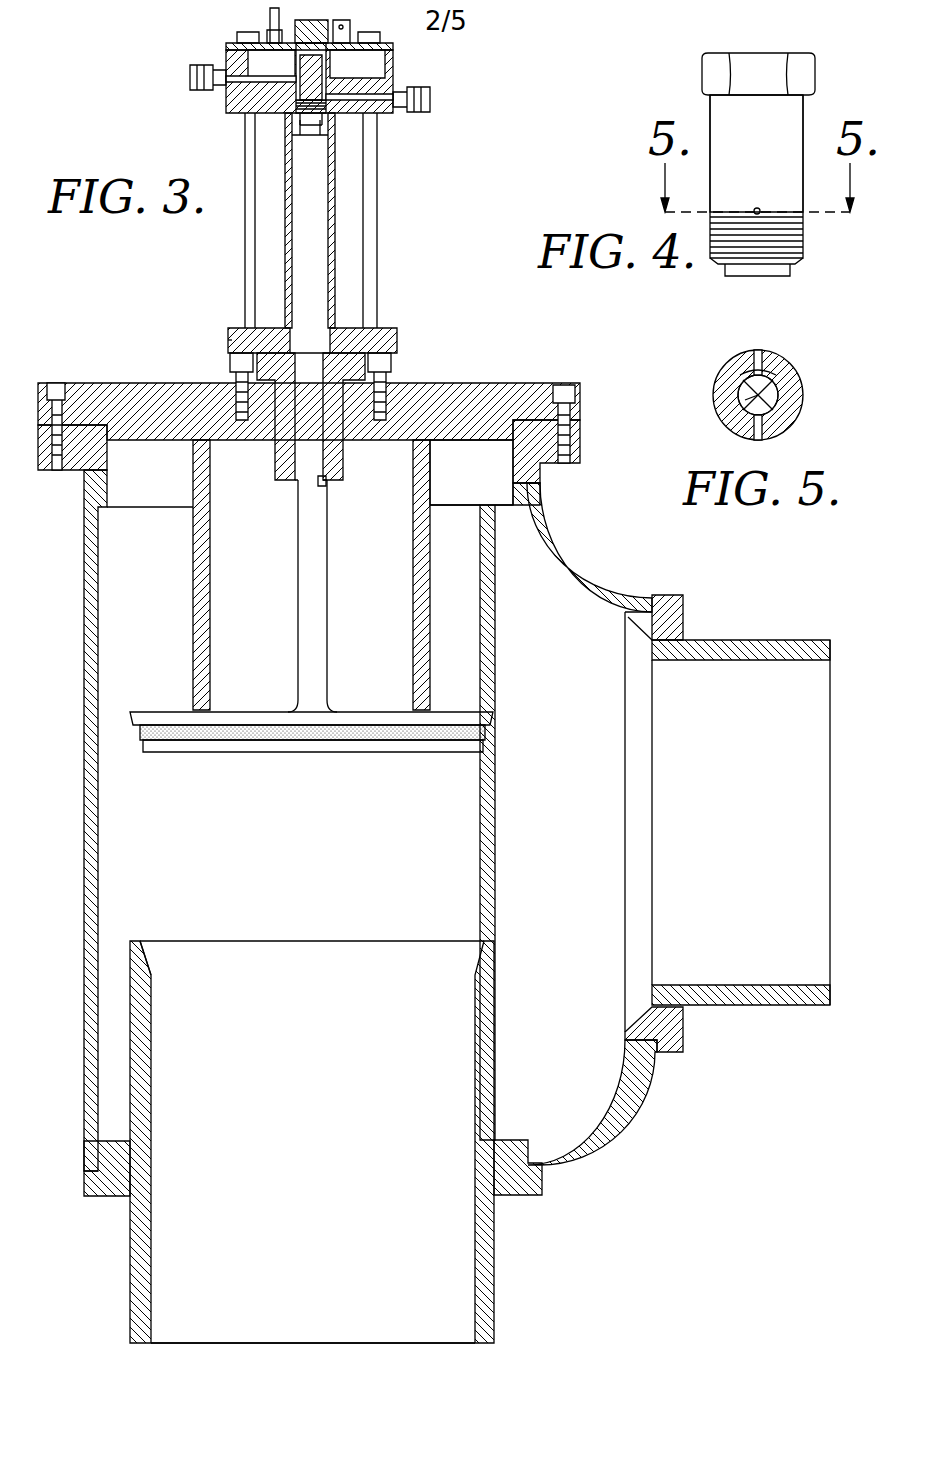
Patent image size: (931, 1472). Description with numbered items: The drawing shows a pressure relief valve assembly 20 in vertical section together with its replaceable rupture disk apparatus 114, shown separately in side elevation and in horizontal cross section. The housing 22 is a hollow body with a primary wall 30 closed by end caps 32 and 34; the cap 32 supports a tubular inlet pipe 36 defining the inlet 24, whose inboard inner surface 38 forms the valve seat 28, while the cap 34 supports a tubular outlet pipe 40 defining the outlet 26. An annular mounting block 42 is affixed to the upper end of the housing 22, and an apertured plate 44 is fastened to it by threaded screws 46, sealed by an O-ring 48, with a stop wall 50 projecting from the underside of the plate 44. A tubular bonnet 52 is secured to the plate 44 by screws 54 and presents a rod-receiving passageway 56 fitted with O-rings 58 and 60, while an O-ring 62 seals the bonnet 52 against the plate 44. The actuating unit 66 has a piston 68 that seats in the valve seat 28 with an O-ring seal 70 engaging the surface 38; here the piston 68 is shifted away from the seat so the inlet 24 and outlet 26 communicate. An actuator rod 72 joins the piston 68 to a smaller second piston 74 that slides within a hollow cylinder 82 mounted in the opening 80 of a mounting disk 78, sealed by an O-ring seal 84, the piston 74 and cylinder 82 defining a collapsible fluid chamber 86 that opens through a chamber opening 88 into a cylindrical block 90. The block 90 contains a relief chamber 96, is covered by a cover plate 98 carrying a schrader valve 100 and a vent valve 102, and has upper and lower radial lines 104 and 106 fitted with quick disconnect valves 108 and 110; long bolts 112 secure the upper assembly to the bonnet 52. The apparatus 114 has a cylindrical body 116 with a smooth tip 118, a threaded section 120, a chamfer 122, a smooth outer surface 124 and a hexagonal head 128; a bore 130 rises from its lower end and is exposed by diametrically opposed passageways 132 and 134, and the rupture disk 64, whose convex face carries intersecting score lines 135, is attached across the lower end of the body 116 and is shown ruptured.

In FIG. 3, the valve assembly 20 is at (600, 575).
In FIG. 3, the housing 22 is at (580, 1092).
In FIG. 3, the inlet 24 is at (500, 1320).
In FIG. 3, the outlet 26 is at (815, 1012).
In FIG. 3, the valve seat 28 is at (500, 945).
In FIG. 3, the primary wall 30 is at (86, 850).
In FIG. 3, the end cap 32 is at (105, 1172).
In FIG. 3, the end cap 34 is at (680, 1032).
In FIG. 3, the inlet pipe 36 is at (490, 1240).
In FIG. 3, the inner surface 38 is at (142, 975).
In FIG. 3, the outlet pipe 40 is at (762, 655).
In FIG. 3, the mounting block 42 is at (582, 452).
In FIG. 3, the apertured plate 44 is at (518, 395).
In FIG. 3, the threaded screws 46 is at (57, 392).
In FIG. 3, the O-ring 48 is at (522, 430).
In FIG. 3, the stop wall 50 is at (420, 616).
In FIG. 3, the bonnet 52 is at (338, 452).
In FIG. 3, the screws 54 is at (240, 362).
In FIG. 3, the rod-receiving passageway 56 is at (300, 490).
In FIG. 3, the O-ring 58 is at (398, 334).
In FIG. 3, the O-ring 60 is at (328, 482).
In FIG. 3, the O-ring 62 is at (267, 390).
In FIG. 5, the rupture disk 64 is at (778, 398).
In FIG. 3, the pressure responsive actuating unit 66 is at (500, 712).
In FIG. 3, the piston 68 is at (400, 746).
In FIG. 3, the O-ring seal 70 is at (220, 735).
In FIG. 3, the actuator rod 72 is at (306, 628).
In FIG. 3, the second piston 74 is at (297, 112).
In FIG. 3, the mounting disk 78 is at (230, 340).
In FIG. 3, the rod-receiving opening 80 is at (270, 353).
In FIG. 3, the cylinder 82 is at (337, 218).
In FIG. 3, the O-ring seal 84 is at (340, 328).
In FIG. 3, the fluid chamber 86 is at (300, 212).
In FIG. 3, the chamber opening 88 is at (322, 104).
In FIG. 3, the block 90 is at (395, 72).
In FIG. 3, the relief chamber 96 is at (355, 65).
In FIG. 3, the cover plate 98 is at (257, 45).
In FIG. 3, the schrader valve 100 is at (272, 25).
In FIG. 3, the vent valve 102 is at (348, 24).
In FIG. 3, the upper radial fluid line 104 is at (257, 82).
In FIG. 3, the lower radial fluid line 106 is at (362, 100).
In FIG. 3, the quick disconnect valve 108 is at (195, 78).
In FIG. 3, the quick disconnect valve 110 is at (432, 100).
In FIG. 3, the long bolts 112 is at (378, 190).
In FIG. 3, the rupture disk apparatus 114 is at (302, 28).
In FIG. 4, the rupture disk apparatus 114 is at (748, 158).
In FIG. 4, the body 116 is at (808, 120).
In FIG. 5, the body 116 is at (720, 383).
In FIG. 4, the tip 118 is at (775, 272).
In FIG. 4, the threaded section 120 is at (805, 237).
In FIG. 4, the chamfer 122 is at (722, 264).
In FIG. 4, the outer surface 124 is at (720, 125).
In FIG. 4, the hexagonal head 128 is at (718, 62).
In FIG. 5, the bore 130 is at (748, 370).
In FIG. 4, the fluid passageway 132 is at (757, 207).
In FIG. 5, the fluid passageway 132 is at (758, 438).
In FIG. 5, the fluid passageway 134 is at (762, 352).
In FIG. 5, the score lines 135 is at (745, 400).